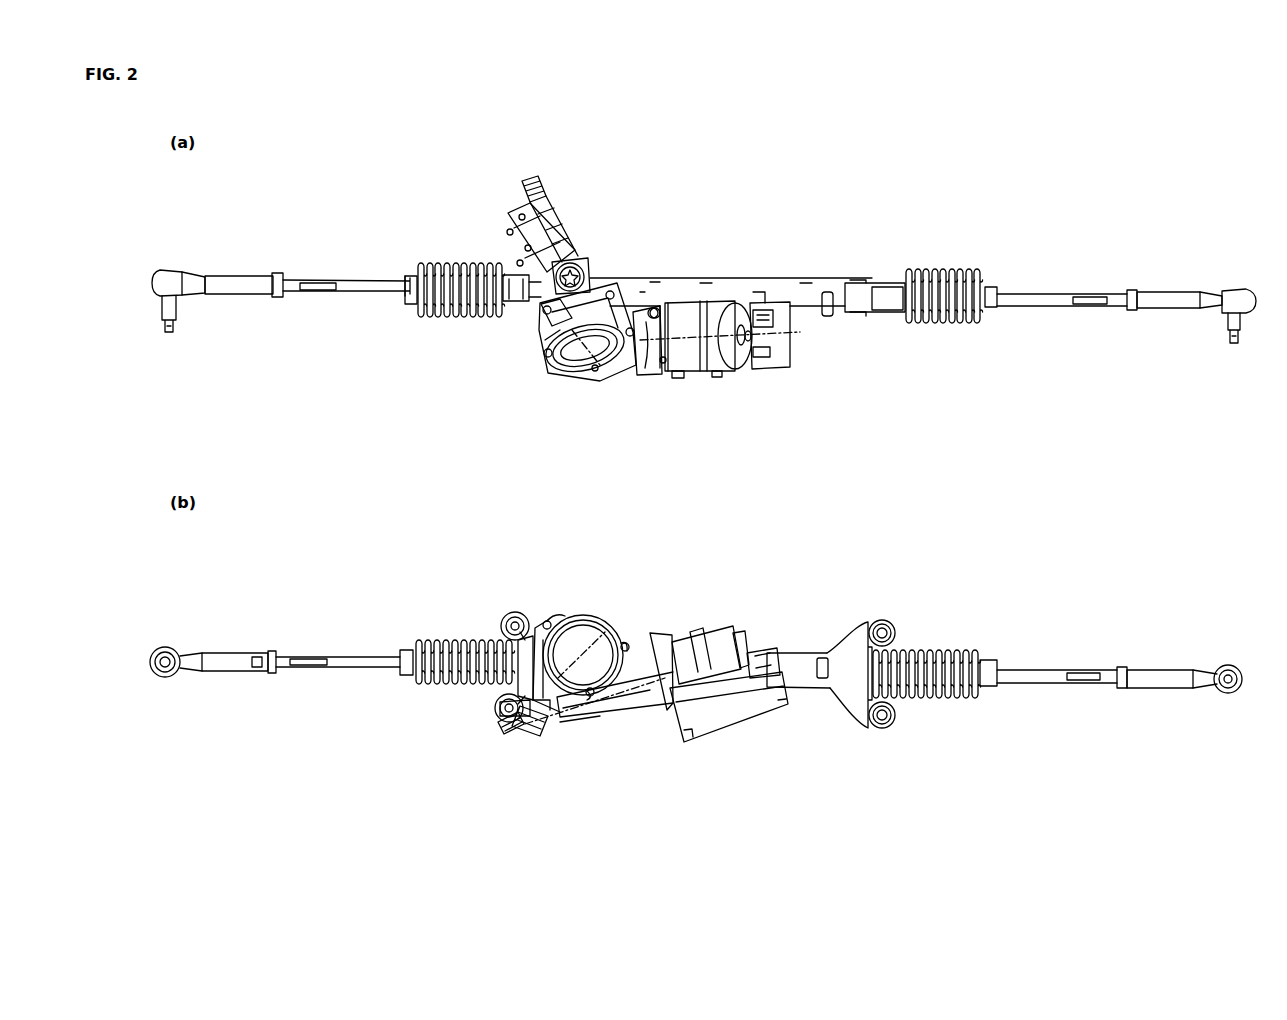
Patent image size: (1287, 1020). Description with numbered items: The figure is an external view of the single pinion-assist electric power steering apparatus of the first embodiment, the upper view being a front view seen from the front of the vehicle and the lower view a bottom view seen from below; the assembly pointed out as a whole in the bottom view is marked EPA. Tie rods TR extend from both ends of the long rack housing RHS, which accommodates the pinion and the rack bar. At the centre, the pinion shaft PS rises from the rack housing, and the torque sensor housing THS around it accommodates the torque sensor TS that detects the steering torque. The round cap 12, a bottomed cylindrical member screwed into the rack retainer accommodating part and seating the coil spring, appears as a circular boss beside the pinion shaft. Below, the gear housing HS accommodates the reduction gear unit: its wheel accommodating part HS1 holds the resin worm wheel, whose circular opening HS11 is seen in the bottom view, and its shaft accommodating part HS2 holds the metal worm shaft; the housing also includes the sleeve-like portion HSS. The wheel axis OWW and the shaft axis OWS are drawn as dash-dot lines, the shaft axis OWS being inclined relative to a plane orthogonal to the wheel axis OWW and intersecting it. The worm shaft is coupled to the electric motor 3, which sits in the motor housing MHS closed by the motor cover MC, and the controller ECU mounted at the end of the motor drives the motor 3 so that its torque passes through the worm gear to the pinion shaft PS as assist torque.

The tie rod TR is at (270, 262).
The pinion shaft PS is at (532, 200).
The torque sensor TS is at (508, 243).
The torque sensor housing THS is at (575, 232).
The cap 12 is at (592, 268).
The motor housing MHS is at (680, 323).
The rack housing RHS is at (713, 274).
The shaft axis OWS is at (735, 333).
The wheel axis OWW is at (594, 365).
The wheel accommodating part HS1 is at (540, 327).
The shaft accommodating part HS2 is at (628, 365).
The gear housing HS is at (536, 374).
The housing opening HS11 is at (578, 637).
The housing sleeve HSS is at (634, 695).
The electric motor 3 is at (694, 390).
The motor cover MC is at (722, 372).
The controller ECU is at (767, 383).
The electric power assist unit EPA is at (588, 726).